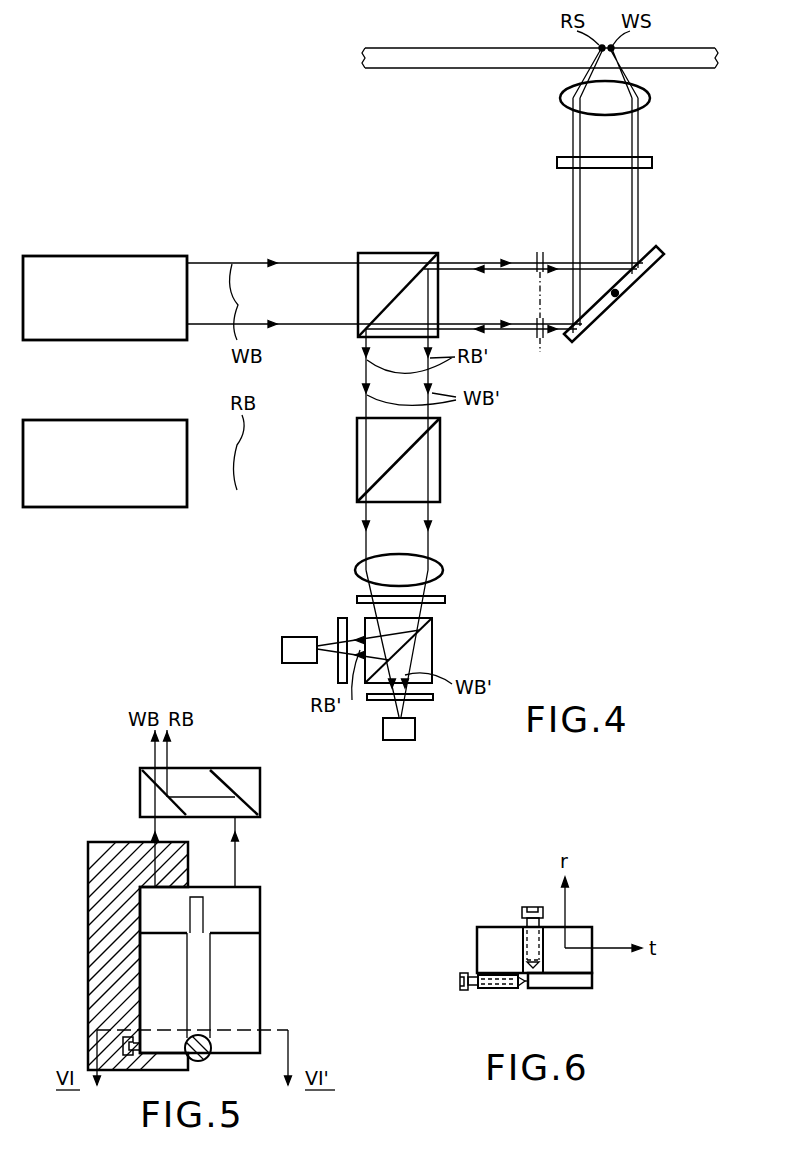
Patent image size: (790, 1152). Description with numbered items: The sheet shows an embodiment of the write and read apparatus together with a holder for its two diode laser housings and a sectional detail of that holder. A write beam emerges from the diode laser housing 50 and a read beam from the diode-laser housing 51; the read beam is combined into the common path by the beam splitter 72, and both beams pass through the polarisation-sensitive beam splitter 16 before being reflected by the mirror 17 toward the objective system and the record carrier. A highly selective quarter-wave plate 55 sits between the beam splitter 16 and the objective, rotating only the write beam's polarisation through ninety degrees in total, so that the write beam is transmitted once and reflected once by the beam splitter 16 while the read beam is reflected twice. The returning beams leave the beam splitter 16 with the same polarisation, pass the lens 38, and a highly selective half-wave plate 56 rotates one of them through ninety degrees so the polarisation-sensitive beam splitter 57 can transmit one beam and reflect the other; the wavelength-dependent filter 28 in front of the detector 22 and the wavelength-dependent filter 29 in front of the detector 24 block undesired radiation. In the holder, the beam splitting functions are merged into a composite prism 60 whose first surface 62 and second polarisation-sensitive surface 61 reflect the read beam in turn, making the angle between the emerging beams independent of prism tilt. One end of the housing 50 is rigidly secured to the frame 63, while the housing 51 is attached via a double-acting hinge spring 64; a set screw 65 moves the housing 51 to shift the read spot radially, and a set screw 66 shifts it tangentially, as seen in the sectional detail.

In FIG. 4, the diode laser housing 50 is at (36, 328).
In FIG. 5, the diode laser housing 50 is at (152, 972).
In FIG. 6, the diode laser housing 50 is at (483, 942).
In FIG. 4, the diode-laser housing 51 is at (36, 432).
In FIG. 5, the diode-laser housing 51 is at (243, 973).
In FIG. 6, the diode-laser housing 51 is at (586, 937).
In FIG. 4, the polarisation-sensitive beam splitter 16 is at (358, 305).
In FIG. 4, the beam splitter 72 is at (376, 445).
In FIG. 4, the mirror 17 is at (650, 257).
In FIG. 4, the λ/4 plate 55 is at (653, 163).
In FIG. 4, the lens 38 is at (440, 572).
In FIG. 4, the λ/2 plate 56 is at (447, 600).
In FIG. 4, the polarisation-sensitive beam splitter 57 is at (427, 640).
In FIG. 4, the wavelength-dependent filter 28 is at (340, 616).
In FIG. 4, the detector 22 is at (282, 650).
In FIG. 4, the wavelength-dependent filter 29 is at (435, 700).
In FIG. 4, the detector 24 is at (415, 731).
In FIG. 5, the composite prism 60 is at (194, 768).
In FIG. 5, the second polarisation-sensitive surface 61 is at (166, 802).
In FIG. 5, the first surface 62 is at (237, 783).
In FIG. 5, the frame 63 is at (100, 853).
In FIG. 5, the double-acting hinge spring 64 is at (197, 893).
In FIG. 5, the set screw 65 is at (208, 1060).
In FIG. 6, the set screw 65 is at (545, 957).
In FIG. 5, the set screw 66 is at (128, 1056).
In FIG. 6, the set screw 66 is at (498, 985).